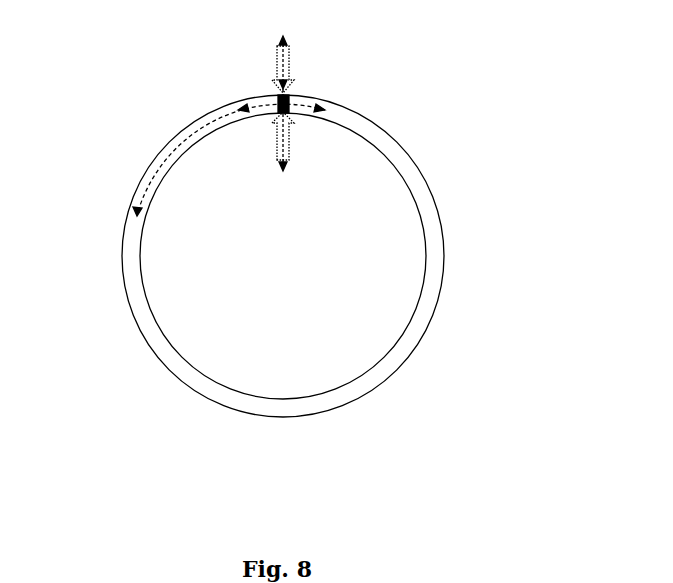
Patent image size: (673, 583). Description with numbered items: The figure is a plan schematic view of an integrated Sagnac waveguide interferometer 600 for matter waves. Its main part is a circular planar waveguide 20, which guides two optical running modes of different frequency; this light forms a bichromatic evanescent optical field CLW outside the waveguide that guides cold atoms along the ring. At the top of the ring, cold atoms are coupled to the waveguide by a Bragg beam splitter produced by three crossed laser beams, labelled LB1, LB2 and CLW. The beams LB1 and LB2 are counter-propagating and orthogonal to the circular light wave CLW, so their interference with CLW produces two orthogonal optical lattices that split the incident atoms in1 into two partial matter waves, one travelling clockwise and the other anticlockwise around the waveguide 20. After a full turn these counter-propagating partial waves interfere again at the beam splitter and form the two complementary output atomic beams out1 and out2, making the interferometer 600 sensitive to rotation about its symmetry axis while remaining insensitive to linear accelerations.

The circular planar waveguide 20 is at (140, 288).
The integrated Sagnac waveguide interferometer 600 is at (329, 226).
The bichromatic evanescent optical field CLW is at (229, 160).
The laser beam LB1 is at (262, 69).
The laser beam LB2 is at (262, 136).
The incident atoms in1 is at (304, 77).
The output atomic beam out1 is at (307, 48).
The output atomic beam out2 is at (308, 159).